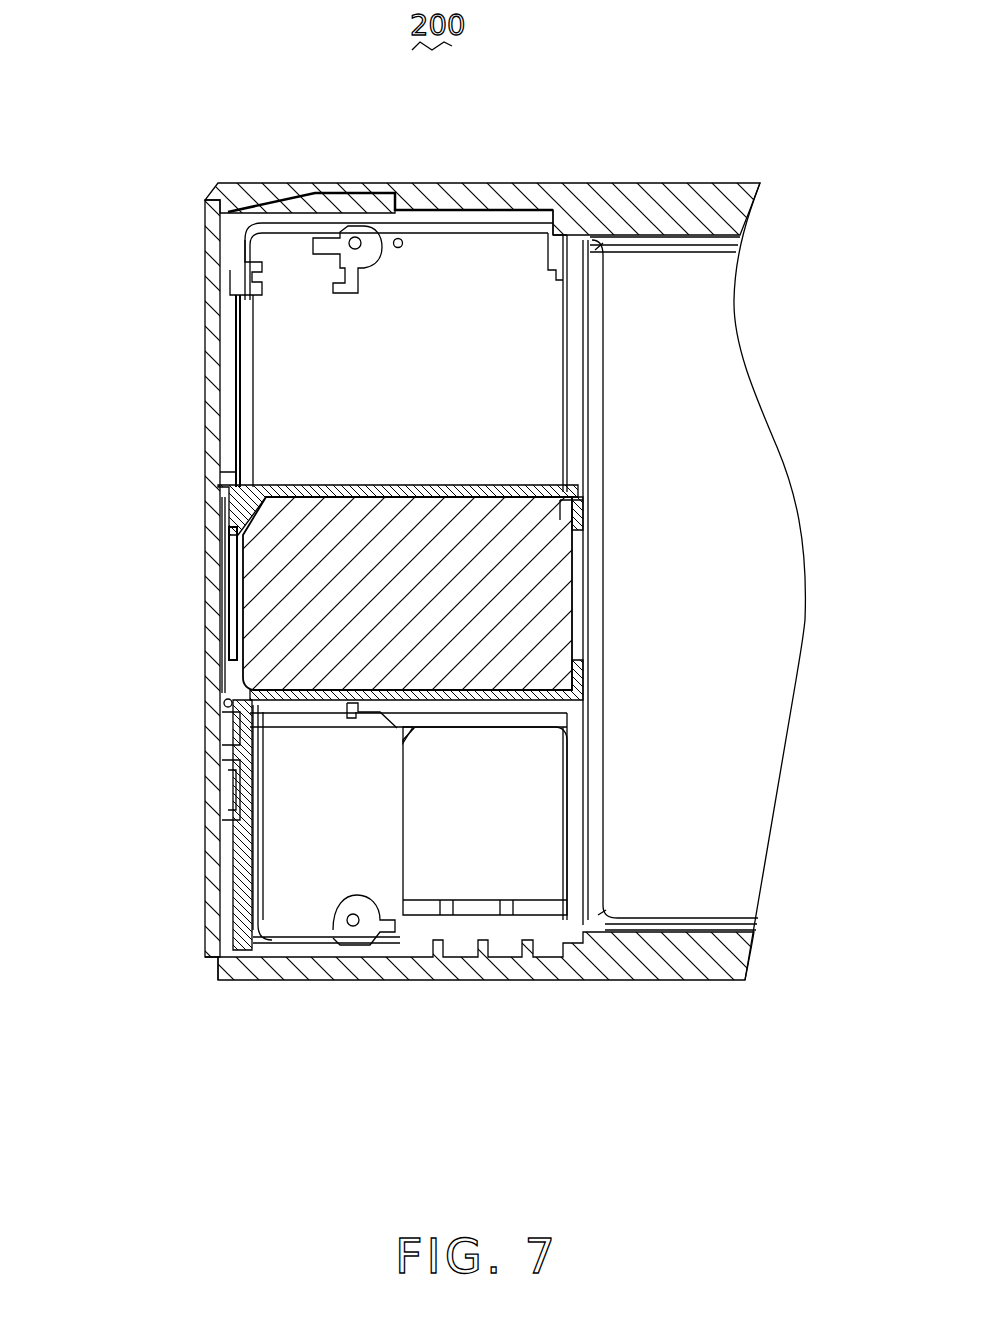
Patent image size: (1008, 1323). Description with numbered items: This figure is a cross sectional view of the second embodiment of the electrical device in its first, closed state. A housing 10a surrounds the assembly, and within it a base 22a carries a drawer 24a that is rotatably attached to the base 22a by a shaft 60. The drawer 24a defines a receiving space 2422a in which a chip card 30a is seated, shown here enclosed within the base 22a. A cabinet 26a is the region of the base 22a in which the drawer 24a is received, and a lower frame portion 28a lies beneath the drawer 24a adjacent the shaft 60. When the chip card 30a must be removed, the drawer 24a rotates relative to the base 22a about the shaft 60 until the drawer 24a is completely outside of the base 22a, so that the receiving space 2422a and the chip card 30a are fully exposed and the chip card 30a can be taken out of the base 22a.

The base 22a is at (640, 215).
The housing bottom wall 10a is at (650, 958).
The upper frame 26a is at (360, 445).
The drawer 24a is at (245, 500).
The receiving space 2422a is at (540, 492).
The chip card 30a is at (283, 587).
The shaft 60 is at (224, 703).
The lower frame 28a is at (213, 815).